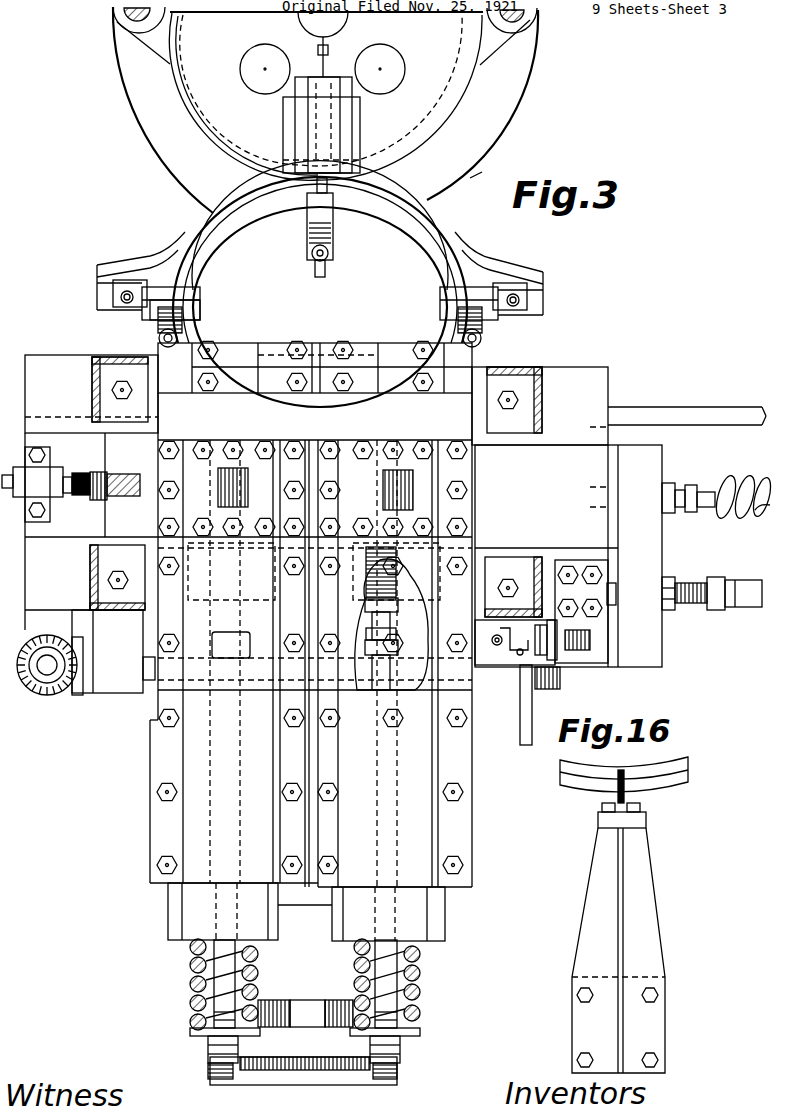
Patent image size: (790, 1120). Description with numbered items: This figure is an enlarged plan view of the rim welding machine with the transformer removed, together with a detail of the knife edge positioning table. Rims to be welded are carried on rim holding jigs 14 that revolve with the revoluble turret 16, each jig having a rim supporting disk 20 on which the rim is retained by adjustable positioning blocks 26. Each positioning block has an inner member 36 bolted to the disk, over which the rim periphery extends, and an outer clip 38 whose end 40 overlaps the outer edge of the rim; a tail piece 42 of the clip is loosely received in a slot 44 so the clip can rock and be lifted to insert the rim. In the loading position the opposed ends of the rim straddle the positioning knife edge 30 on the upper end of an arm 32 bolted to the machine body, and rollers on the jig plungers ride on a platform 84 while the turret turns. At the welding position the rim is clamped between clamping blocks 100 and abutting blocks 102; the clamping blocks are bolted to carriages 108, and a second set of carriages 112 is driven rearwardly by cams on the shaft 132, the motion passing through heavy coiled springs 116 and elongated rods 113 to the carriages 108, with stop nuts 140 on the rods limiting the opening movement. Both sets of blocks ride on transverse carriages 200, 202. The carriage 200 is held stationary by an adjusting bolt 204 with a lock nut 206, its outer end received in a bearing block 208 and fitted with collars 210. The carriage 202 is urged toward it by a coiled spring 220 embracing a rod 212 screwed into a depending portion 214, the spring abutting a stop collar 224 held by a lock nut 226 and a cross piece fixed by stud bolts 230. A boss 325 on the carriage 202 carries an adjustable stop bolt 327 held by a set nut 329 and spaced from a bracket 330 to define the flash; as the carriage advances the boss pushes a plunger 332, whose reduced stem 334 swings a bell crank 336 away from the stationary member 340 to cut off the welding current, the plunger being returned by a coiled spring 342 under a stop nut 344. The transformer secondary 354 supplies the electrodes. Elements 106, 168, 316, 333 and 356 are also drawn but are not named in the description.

In FIG. 3, the rim holding jig 14 is at (202, 213).
In FIG. 3, the revoluble turret 16 is at (475, 82).
In FIG. 3, the rim supporting disk 20 is at (320, 307).
In FIG. 3, the adjustable positioning block 26 is at (487, 292).
In FIG. 16, the positioning knife edge 30 is at (630, 795).
In FIG. 16, the arm 32 is at (600, 874).
In FIG. 3, the inner member 36 is at (180, 285).
In FIG. 3, the outer clip 38 is at (200, 312).
In FIG. 3, the end of the clip 40 is at (195, 297).
In FIG. 3, the tail piece 42 is at (160, 300).
In FIG. 3, the slot 44 is at (148, 258).
In FIG. 3, the platform 84 is at (470, 180).
In FIG. 3, the clamping block 100 is at (360, 345).
In FIG. 3, the abutting block 102 is at (222, 403).
In FIG. 3, the shaft 106 is at (410, 570).
In FIG. 3, the carriage 108 is at (250, 600).
In FIG. 3, the second carriage 112 is at (195, 900).
In FIG. 3, the elongated rod 113 is at (375, 962).
In FIG. 3, the heavy coiled spring 116 is at (190, 982).
In FIG. 3, the shaft 132 is at (150, 690).
In FIG. 3, the stop nut 140 is at (400, 680).
In FIG. 3, the gear 168 is at (60, 690).
In FIG. 3, the transverse carriage 200 is at (115, 440).
In FIG. 3, the transverse carriage 202 is at (575, 455).
In FIG. 3, the adjusting bolt 204 is at (80, 472).
In FIG. 3, the lock nut 206 is at (117, 494).
In FIG. 3, the bearing block 208 is at (45, 465).
In FIG. 3, the collar 210 is at (50, 500).
In FIG. 3, the rod 212 is at (770, 510).
In FIG. 3, the depending portion 214 is at (622, 480).
In FIG. 3, the coiled spring 220 is at (715, 513).
In FIG. 3, the stop collar 224 is at (718, 480).
In FIG. 3, the lock nut 226 is at (692, 485).
In FIG. 3, the stud bolt 230 is at (685, 393).
In FIG. 3, the rod 316 is at (520, 700).
In FIG. 3, the boss 325 is at (600, 650).
In FIG. 3, the adjustable stop bolt 327 is at (736, 577).
In FIG. 3, the set nut 329 is at (673, 612).
In FIG. 3, the bracket 330 is at (585, 560).
In FIG. 3, the plunger 332 is at (612, 605).
In FIG. 3, the lever 333 is at (500, 640).
In FIG. 3, the reduced stem 334 is at (540, 628).
In FIG. 3, the bell crank 336 is at (540, 648).
In FIG. 3, the stationary member 340 is at (492, 636).
In FIG. 3, the coiled spring 342 is at (590, 655).
In FIG. 3, the stop nut 344 is at (513, 587).
In FIG. 3, the secondary 354 is at (476, 474).
In FIG. 3, the plate 356 is at (476, 500).